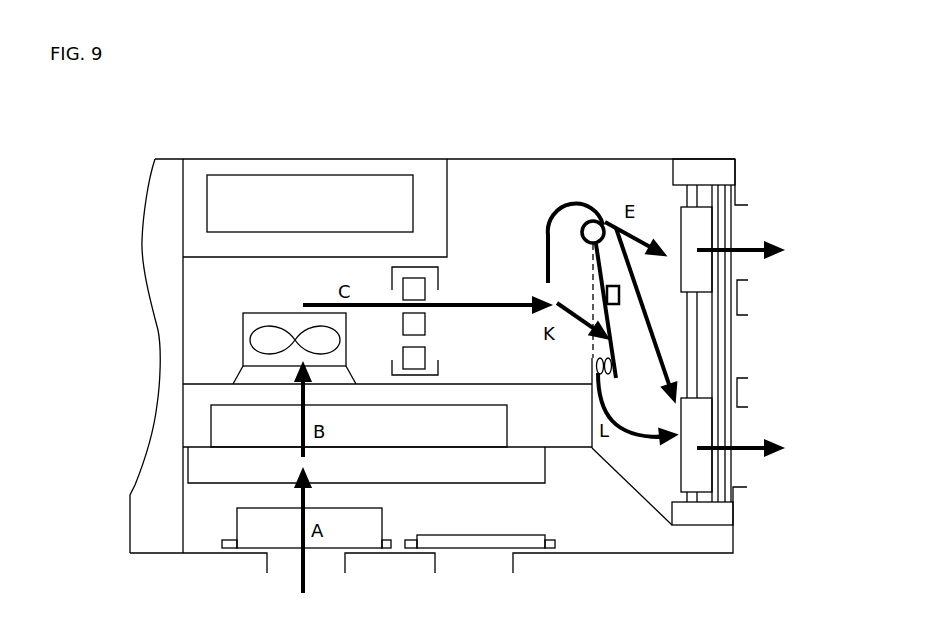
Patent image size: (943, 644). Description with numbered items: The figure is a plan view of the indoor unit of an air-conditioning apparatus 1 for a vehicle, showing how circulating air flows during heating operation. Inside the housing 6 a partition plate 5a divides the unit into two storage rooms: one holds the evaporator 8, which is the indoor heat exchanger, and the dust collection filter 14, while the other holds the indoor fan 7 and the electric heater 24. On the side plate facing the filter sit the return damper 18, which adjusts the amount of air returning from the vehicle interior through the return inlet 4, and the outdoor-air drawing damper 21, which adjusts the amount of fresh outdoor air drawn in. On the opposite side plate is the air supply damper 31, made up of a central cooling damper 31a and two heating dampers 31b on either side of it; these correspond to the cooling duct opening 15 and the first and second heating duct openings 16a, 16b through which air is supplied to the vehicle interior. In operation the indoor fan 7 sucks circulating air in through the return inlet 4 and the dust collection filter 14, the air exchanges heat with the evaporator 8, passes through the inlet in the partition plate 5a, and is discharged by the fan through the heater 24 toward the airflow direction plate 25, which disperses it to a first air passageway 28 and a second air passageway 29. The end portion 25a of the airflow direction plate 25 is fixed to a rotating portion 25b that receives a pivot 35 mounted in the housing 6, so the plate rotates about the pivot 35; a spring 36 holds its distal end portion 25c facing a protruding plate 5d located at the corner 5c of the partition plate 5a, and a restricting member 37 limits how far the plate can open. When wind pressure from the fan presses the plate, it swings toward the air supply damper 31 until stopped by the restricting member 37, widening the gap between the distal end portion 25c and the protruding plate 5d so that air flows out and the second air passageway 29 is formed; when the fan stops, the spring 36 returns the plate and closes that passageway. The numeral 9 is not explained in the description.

The air-conditioning apparatus 1 is at (138, 156).
The return inlet 4 is at (317, 563).
The partition plate 5a is at (207, 384).
The corner 5c is at (590, 388).
The protruding plate 5d is at (594, 367).
The housing 6 is at (658, 160).
The indoor fan 7 is at (289, 320).
The evaporator 8 is at (225, 430).
The side cover 9 is at (143, 230).
The dust collection filter 14 is at (197, 466).
The cooling duct opening 15 is at (740, 345).
The first heating duct opening 16a is at (750, 265).
The second heating duct opening 16b is at (745, 468).
The return damper 18 is at (262, 535).
The outdoor-air drawing damper 21 is at (483, 545).
The heater 24 is at (390, 277).
The airflow direction plate 25 is at (590, 265).
The end portion 25a is at (592, 250).
The rotating portion 25b is at (595, 214).
The distal end portion 25c is at (620, 390).
The first air passageway 28 is at (560, 208).
The second air passageway 29 is at (618, 390).
The air supply damper 31 is at (737, 168).
The cooling damper 31a is at (692, 325).
The heating damper 31b is at (700, 235).
The pivot 35 is at (617, 212).
The spring 36 is at (620, 388).
The restricting member 37 is at (621, 300).